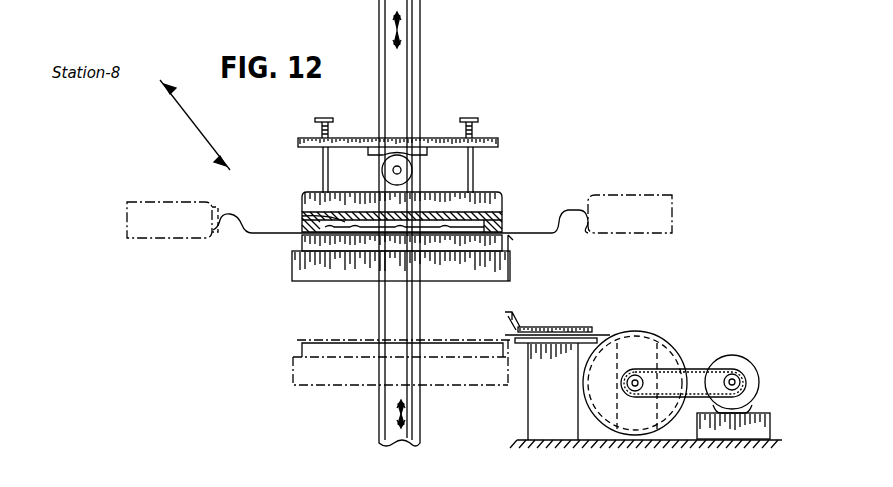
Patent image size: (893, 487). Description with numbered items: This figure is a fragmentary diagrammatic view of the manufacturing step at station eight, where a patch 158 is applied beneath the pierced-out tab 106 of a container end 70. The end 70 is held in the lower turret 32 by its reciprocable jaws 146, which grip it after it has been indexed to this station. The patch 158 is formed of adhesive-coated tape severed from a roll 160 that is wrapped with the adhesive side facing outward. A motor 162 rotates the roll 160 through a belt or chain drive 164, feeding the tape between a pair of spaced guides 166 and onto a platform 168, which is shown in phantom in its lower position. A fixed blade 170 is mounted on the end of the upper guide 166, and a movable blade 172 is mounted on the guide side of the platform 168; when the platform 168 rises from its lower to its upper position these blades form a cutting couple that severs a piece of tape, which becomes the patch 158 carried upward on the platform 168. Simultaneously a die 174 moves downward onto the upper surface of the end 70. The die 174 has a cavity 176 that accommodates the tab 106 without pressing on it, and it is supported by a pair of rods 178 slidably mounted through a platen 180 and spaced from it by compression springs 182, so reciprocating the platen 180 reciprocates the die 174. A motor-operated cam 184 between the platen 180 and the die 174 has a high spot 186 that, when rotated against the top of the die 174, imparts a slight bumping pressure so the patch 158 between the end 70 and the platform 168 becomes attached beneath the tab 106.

The lower turret 32 is at (173, 203).
The jaws 146 is at (218, 207).
The die 174 is at (301, 194).
The tab 106 is at (302, 214).
The patch 158 is at (300, 237).
The platform 168 is at (306, 283).
The rods 178 is at (323, 163).
The compression springs 182 is at (318, 130).
The platen 180 is at (498, 140).
The motor-operated cam 184 is at (411, 170).
The high spot 186 is at (386, 183).
The cavity 176 is at (490, 214).
The end 70 is at (537, 230).
The movable blade 172 is at (510, 238).
The fixed blade 170 is at (512, 312).
The guides 166 is at (578, 327).
The roll 160 is at (656, 342).
The belt or chain drive 164 is at (696, 369).
The motor 162 is at (738, 358).